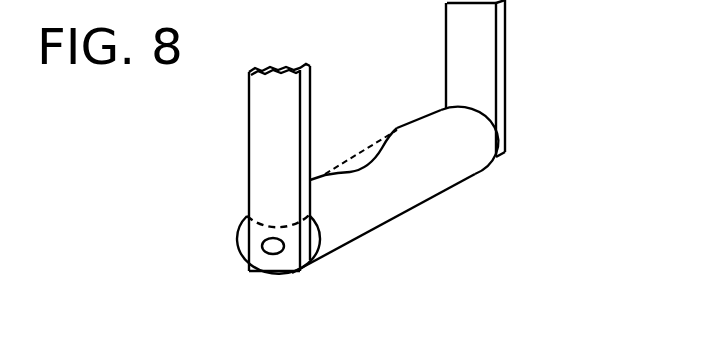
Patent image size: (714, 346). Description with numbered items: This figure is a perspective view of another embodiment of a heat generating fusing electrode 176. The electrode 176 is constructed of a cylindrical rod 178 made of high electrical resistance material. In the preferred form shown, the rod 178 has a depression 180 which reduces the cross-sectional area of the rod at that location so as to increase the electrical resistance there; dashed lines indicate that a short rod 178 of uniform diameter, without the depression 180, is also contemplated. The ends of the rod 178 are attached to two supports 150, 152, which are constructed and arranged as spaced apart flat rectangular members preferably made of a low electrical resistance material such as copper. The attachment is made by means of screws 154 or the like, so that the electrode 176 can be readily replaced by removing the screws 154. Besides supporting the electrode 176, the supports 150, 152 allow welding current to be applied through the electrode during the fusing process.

The support 150 is at (265, 118).
The support 152 is at (505, 57).
The screw 154 is at (272, 247).
The heat generating fusing electrode 176 is at (452, 185).
The cylindrical rod 178 is at (338, 232).
The depression 180 is at (359, 172).